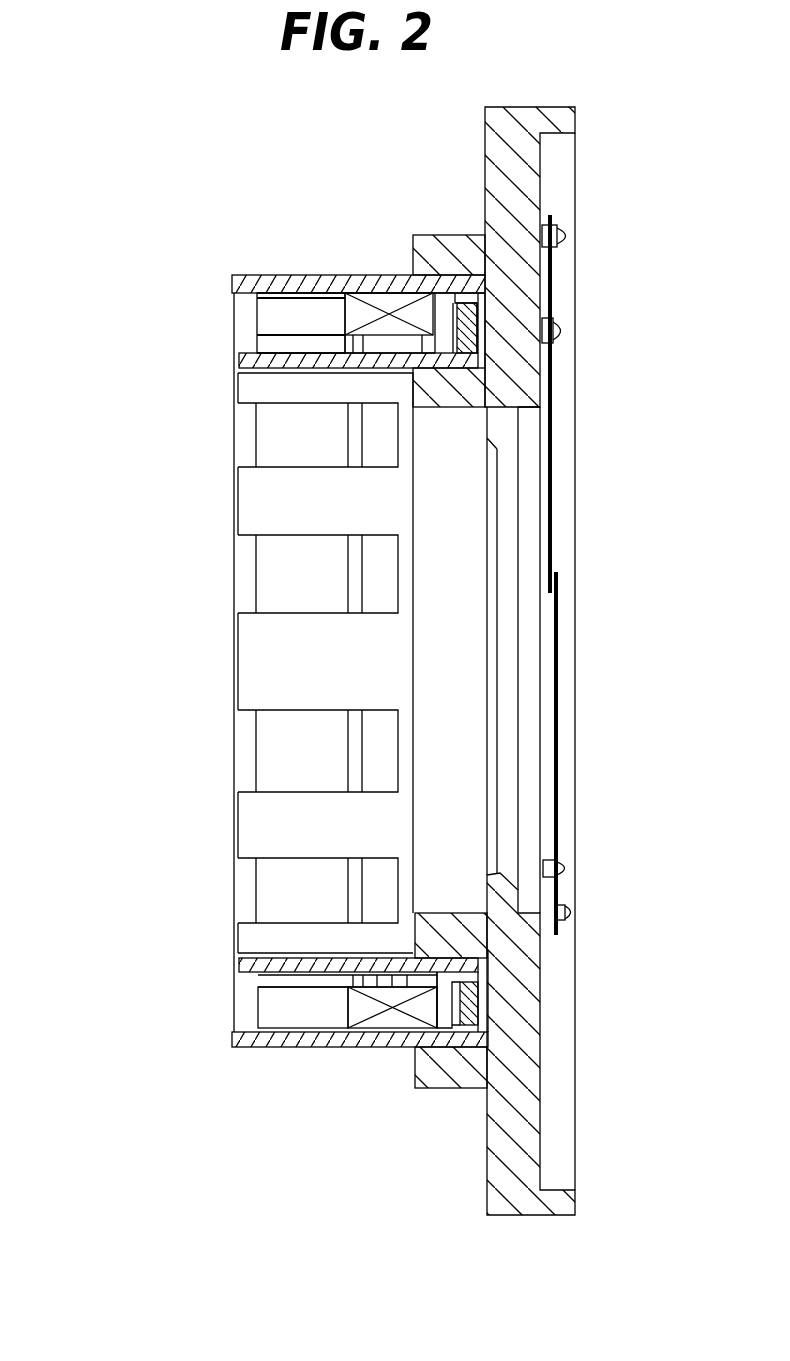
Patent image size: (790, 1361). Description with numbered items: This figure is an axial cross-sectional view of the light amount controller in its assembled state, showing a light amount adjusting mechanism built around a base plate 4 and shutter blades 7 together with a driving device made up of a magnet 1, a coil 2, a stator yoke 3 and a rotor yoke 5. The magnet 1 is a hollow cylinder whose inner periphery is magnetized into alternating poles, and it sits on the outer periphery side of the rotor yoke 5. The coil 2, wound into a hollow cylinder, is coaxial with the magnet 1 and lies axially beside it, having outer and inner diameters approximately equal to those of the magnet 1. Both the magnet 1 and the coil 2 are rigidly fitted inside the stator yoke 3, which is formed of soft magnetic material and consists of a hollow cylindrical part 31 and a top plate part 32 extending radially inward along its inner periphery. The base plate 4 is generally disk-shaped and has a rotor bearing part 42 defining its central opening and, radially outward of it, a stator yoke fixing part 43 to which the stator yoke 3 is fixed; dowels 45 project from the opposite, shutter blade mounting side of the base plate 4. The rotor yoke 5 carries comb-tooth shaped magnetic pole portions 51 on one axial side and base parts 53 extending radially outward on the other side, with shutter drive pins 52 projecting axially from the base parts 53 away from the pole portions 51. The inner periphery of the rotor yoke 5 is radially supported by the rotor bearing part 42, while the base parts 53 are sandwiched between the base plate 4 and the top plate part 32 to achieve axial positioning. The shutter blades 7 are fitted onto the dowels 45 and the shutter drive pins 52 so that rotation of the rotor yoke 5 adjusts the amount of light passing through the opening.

The magnet 1 is at (300, 1015).
The coil 2 is at (385, 1017).
The stator yoke 3 is at (446, 1035).
The base plate 4 is at (502, 1163).
The rotor yoke 5 is at (230, 360).
The shutter blades 7 is at (570, 432).
The hollow cylindrical part 31 is at (265, 283).
The top plate part 32 is at (432, 292).
The rotor bearing part 42 is at (430, 390).
The stator yoke fixing part 43 is at (466, 1066).
The dowels 45 is at (570, 230).
The magnetic pole portions 51 is at (243, 935).
The shutter drive pins 52 is at (570, 320).
The base parts 53 is at (456, 318).